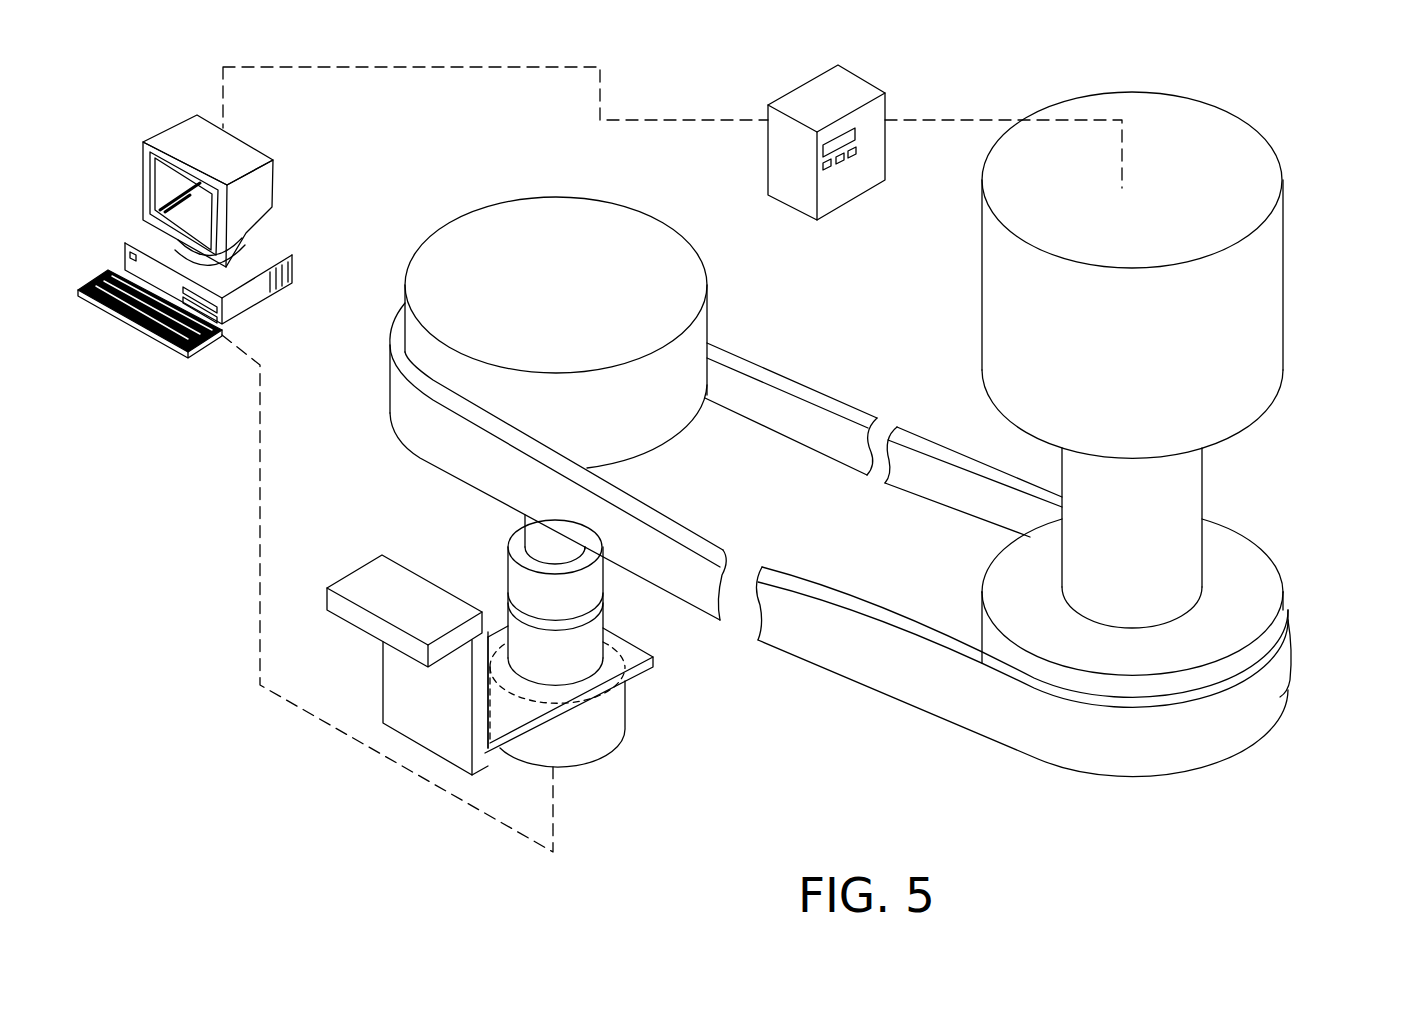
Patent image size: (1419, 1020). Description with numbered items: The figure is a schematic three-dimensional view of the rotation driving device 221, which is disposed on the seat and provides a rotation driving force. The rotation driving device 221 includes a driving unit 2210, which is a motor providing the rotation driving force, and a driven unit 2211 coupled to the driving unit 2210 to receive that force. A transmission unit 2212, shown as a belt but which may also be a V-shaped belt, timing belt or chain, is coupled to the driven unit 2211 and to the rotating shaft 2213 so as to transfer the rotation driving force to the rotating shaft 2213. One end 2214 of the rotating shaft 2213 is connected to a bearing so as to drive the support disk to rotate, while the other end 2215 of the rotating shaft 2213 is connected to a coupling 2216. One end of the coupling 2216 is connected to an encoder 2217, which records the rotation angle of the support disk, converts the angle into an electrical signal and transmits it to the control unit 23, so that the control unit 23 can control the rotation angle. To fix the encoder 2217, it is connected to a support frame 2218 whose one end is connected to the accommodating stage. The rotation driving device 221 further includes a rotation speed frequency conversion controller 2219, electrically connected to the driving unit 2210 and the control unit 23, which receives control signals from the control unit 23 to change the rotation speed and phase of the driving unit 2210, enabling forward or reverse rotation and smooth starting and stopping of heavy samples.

The control unit 23 is at (153, 240).
The rotation driving device 221 is at (418, 150).
The driving unit 2210 is at (1280, 270).
The driven unit 2211 is at (1245, 567).
The transmission unit 2212 is at (830, 650).
The rotating shaft 2213 is at (421, 230).
The one end of the rotating shaft 2214 is at (577, 227).
The other end of the rotating shaft 2215 is at (628, 462).
The coupling 2216 is at (522, 593).
The encoder 2217 is at (615, 733).
The support frame 2218 is at (422, 738).
The rotation speed frequency conversion controller 2219 is at (802, 193).